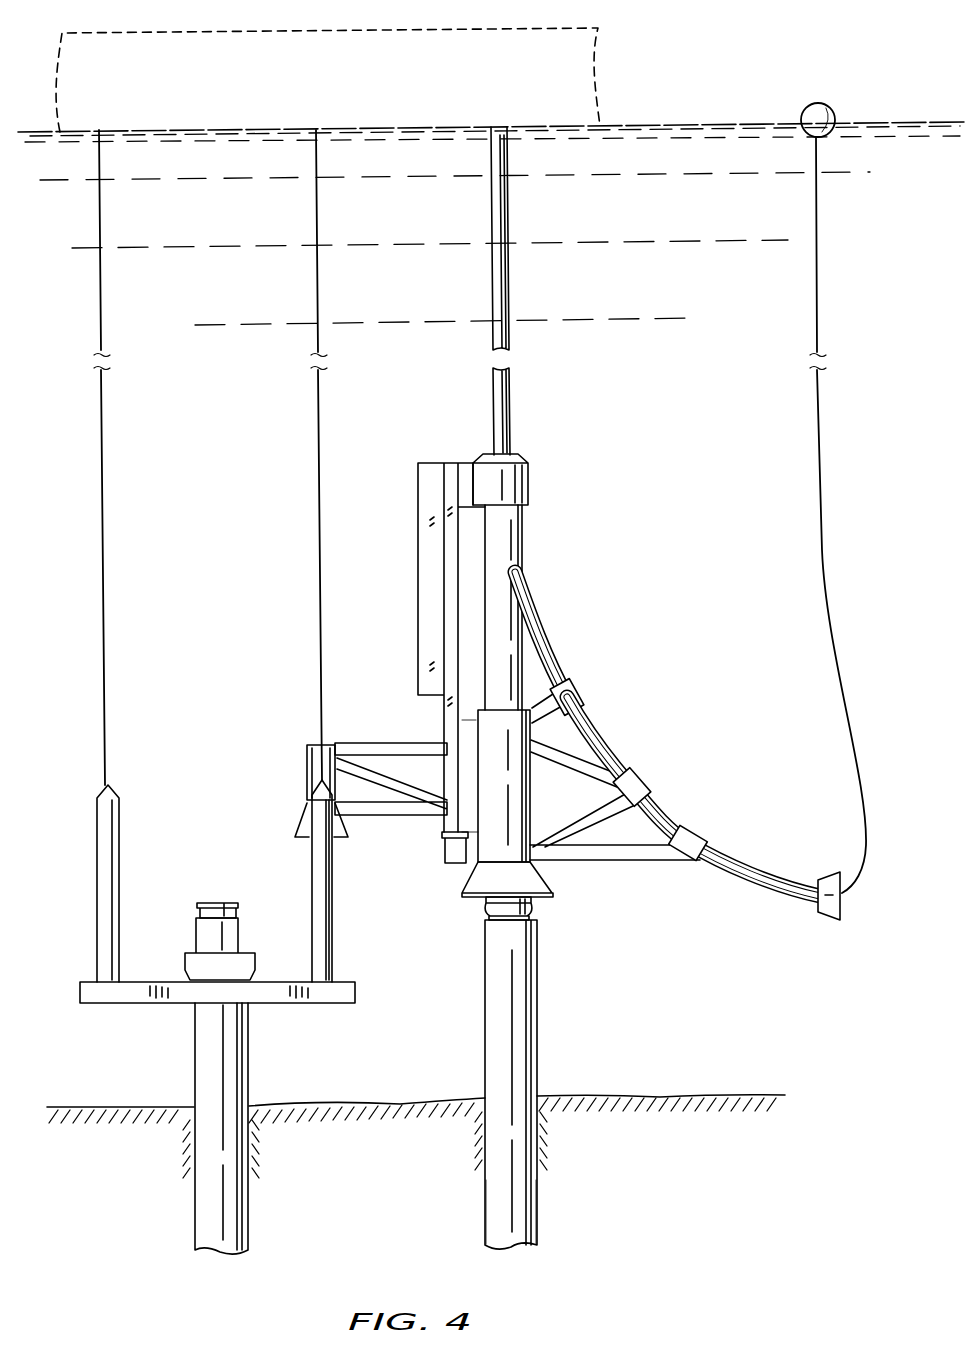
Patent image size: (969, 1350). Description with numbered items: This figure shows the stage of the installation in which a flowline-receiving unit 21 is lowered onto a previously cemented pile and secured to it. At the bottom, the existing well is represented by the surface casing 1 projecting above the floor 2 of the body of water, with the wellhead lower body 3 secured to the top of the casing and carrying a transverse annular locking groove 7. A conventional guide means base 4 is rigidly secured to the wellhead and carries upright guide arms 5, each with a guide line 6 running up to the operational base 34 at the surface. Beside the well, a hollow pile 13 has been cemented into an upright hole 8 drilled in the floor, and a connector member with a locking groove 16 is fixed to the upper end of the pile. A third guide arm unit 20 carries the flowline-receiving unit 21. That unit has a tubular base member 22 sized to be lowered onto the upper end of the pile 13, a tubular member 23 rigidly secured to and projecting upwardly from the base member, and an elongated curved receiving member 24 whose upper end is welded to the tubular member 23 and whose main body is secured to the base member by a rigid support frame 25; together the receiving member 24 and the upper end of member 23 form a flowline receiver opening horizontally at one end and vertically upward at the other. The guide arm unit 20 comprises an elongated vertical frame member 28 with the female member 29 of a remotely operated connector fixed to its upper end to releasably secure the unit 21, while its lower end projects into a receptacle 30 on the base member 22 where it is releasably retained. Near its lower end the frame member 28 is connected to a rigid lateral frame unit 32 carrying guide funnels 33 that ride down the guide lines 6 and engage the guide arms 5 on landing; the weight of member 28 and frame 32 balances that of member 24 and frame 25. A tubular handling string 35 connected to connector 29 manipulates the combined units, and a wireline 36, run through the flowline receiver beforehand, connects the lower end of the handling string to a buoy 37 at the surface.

The surface casing 1 is at (242, 1067).
The floor of the body of water 2 is at (146, 1105).
The wellhead lower body 3 is at (195, 939).
The guide means base 4 is at (127, 1005).
The guide arm 5 is at (120, 806).
The guide line 6 is at (101, 341).
The locking groove 7 is at (198, 910).
The upright hole 8 is at (525, 1213).
The hollow pile 13 is at (528, 1061).
The locking groove 16 is at (533, 912).
The third guide arm unit 20 is at (438, 821).
The flowline-receiving unit 21 is at (548, 634).
The tubular base member 22 is at (526, 798).
The tubular member 23 is at (507, 546).
The receiving member 24 is at (722, 857).
The support frame 25 is at (648, 862).
The vertical frame member 28 is at (447, 725).
The female member of connector 29 is at (529, 478).
The receptacle 30 is at (446, 862).
The lateral frame unit 32 is at (369, 745).
The guide funnel 33 is at (306, 778).
The operational base 34 is at (598, 29).
The tubular handling string 35 is at (510, 346).
The wireline 36 is at (816, 341).
The buoy 37 is at (818, 104).